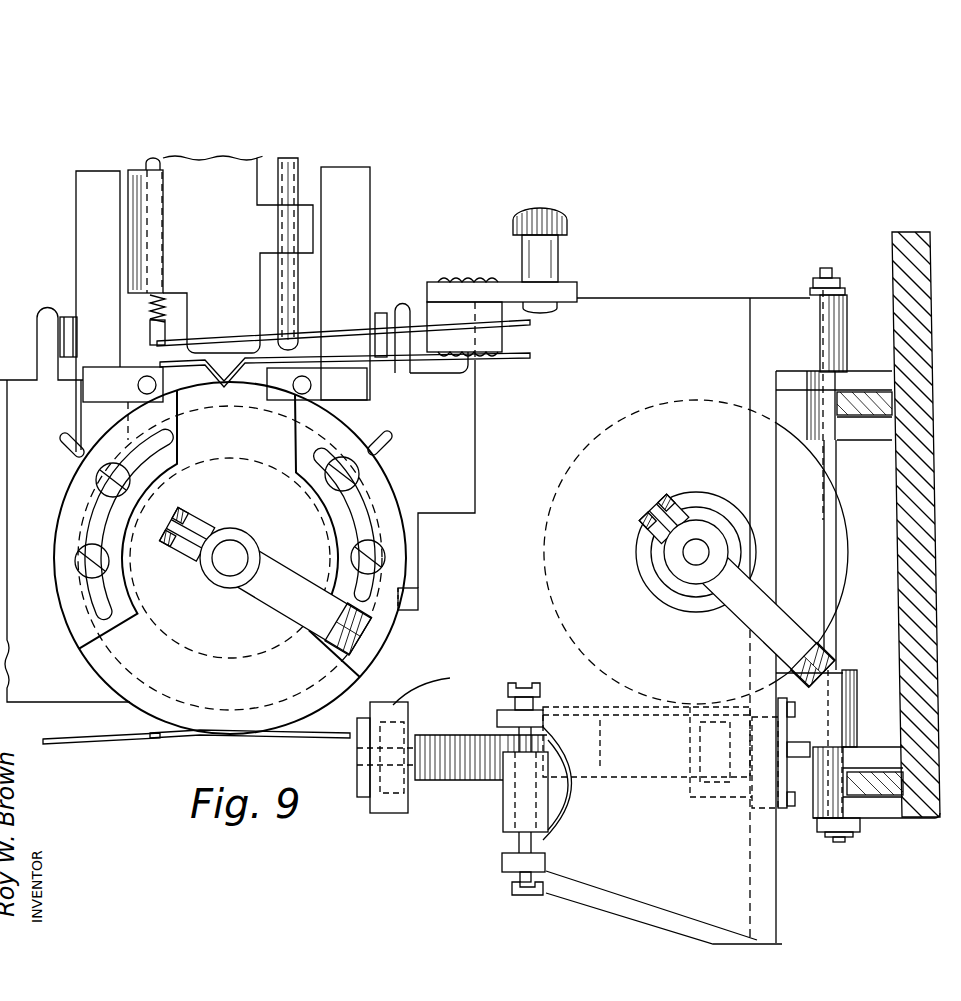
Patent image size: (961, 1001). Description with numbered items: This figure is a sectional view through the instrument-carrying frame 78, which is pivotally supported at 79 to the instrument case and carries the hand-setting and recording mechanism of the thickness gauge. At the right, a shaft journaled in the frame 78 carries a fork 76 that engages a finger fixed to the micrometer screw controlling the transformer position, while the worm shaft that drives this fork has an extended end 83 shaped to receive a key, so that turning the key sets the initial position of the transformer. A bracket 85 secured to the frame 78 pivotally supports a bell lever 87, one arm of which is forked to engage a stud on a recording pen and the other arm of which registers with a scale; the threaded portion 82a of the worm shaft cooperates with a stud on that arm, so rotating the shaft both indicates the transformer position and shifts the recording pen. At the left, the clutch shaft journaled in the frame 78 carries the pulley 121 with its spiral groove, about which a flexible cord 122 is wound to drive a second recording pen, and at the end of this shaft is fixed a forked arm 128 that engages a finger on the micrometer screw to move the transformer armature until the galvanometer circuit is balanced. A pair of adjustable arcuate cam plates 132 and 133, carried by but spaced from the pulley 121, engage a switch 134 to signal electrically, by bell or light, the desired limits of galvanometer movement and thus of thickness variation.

The fork 76 is at (790, 623).
The instrument-carrying frame 78 is at (713, 300).
The pivot 79 is at (827, 272).
The threaded portion 82a is at (448, 780).
The extended shaft end 83 is at (808, 757).
The bracket 85 is at (580, 875).
The bell lever 87 is at (507, 803).
The pulley 121 is at (177, 708).
The flexible cord 122 is at (98, 742).
The forked arm 128 is at (287, 603).
The arcuate cam plate 132 is at (122, 602).
The arcuate cam plate 133 is at (368, 477).
The switch 134 is at (353, 322).